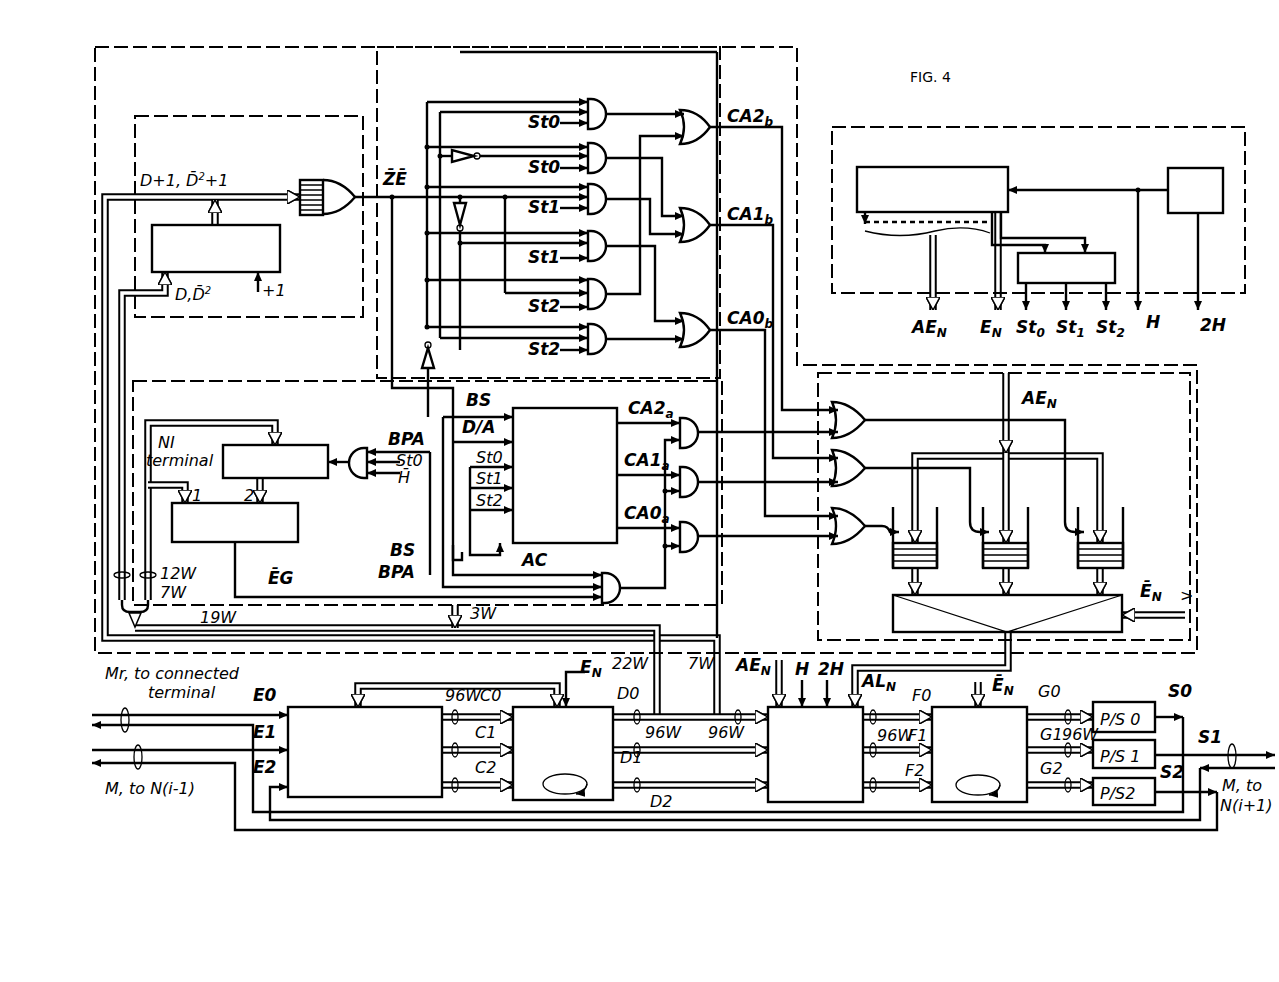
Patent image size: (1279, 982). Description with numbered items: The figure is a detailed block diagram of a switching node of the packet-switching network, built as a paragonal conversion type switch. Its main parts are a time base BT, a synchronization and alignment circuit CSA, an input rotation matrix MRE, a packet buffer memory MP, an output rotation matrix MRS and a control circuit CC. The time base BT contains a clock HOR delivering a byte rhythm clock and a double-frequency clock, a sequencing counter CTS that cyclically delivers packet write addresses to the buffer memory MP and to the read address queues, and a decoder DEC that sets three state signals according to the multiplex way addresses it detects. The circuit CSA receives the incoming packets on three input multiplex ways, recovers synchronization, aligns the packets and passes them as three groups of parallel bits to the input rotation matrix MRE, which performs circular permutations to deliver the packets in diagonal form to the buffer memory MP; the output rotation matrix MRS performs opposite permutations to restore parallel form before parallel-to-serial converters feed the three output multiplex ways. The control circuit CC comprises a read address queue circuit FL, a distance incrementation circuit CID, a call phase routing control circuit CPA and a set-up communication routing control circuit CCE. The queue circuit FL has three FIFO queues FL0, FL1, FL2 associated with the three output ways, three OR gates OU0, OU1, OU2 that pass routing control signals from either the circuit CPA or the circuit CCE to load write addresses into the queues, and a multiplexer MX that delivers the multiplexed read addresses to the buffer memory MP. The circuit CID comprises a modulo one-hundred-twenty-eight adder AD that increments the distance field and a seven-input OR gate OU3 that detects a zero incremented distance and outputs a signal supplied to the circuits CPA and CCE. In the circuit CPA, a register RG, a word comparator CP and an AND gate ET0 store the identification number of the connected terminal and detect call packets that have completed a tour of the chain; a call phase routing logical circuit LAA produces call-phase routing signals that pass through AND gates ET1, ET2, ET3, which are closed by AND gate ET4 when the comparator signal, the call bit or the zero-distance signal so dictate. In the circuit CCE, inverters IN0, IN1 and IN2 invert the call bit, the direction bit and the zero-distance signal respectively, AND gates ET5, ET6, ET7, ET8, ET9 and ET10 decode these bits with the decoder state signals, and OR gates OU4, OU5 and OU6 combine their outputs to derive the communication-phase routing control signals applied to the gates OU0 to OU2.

The control circuit CC is at (797, 92).
The set-up communication routing control circuit CCE is at (377, 92).
The distance incrementation circuit CID is at (208, 118).
The adder AD is at (280, 242).
The seven-input OR gate OU3 is at (346, 183).
The logical inverter IN1 is at (514, 167).
The logical inverter IN2 is at (521, 220).
The logical inverter IN0 is at (432, 360).
The AND gate ET10 is at (636, 109).
The AND gate ET9 is at (636, 170).
The AND gate ET8 is at (636, 201).
The AND gate ET7 is at (636, 269).
The AND gate ET6 is at (636, 222).
The AND gate ET5 is at (636, 331).
The three-input AND gate ET4 is at (641, 521).
The two-input AND gate ET3 is at (727, 418).
The two-input AND gate ET2 is at (727, 471).
The two-input AND gate ET1 is at (727, 526).
The three-input AND gate ET0 is at (352, 480).
The two-input OR gate OU6 is at (757, 250).
The two-input OR gate OU5 is at (757, 323).
The two-input OR gate OU4 is at (757, 405).
The OR gate OU2 is at (958, 465).
The OR gate OU1 is at (910, 488).
The OR gate OU0 is at (865, 516).
The call phase routing control circuit CPA is at (722, 580).
The call phase routing logical circuit LAA is at (563, 410).
The register RG is at (328, 478).
The word comparator CP is at (172, 548).
The read address queue circuit FL is at (818, 600).
The read address queue FL0 is at (893, 563).
The read address queue FL1 is at (983, 563).
The read address queue FL2 is at (1078, 563).
The multiplexer MX is at (893, 615).
The time base BT is at (852, 293).
The sequencing counter CTS is at (1008, 175).
The clock HOR is at (1195, 190).
The decoder DEC is at (1110, 253).
The synchronization and alignment circuit CSA is at (332, 692).
The input rotation matrix MRE is at (530, 690).
The packet buffer memory MP is at (768, 772).
The output rotation matrix MRS is at (1030, 698).